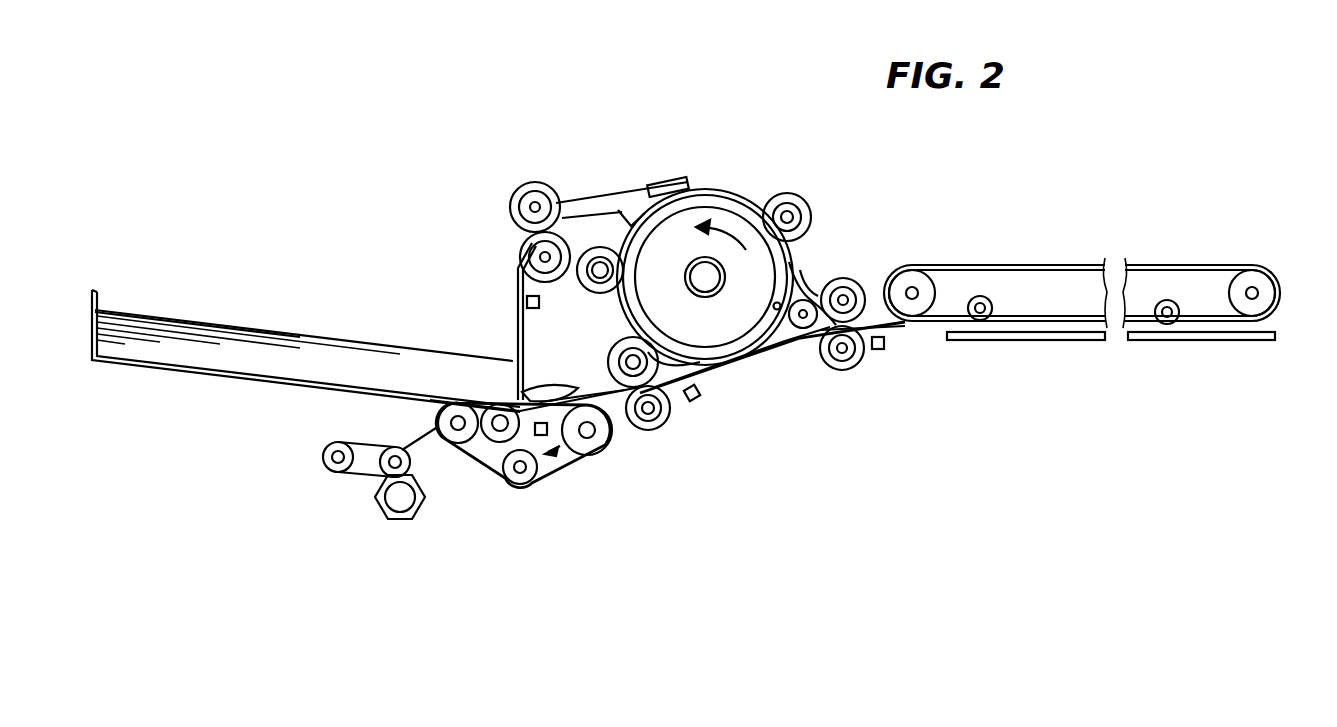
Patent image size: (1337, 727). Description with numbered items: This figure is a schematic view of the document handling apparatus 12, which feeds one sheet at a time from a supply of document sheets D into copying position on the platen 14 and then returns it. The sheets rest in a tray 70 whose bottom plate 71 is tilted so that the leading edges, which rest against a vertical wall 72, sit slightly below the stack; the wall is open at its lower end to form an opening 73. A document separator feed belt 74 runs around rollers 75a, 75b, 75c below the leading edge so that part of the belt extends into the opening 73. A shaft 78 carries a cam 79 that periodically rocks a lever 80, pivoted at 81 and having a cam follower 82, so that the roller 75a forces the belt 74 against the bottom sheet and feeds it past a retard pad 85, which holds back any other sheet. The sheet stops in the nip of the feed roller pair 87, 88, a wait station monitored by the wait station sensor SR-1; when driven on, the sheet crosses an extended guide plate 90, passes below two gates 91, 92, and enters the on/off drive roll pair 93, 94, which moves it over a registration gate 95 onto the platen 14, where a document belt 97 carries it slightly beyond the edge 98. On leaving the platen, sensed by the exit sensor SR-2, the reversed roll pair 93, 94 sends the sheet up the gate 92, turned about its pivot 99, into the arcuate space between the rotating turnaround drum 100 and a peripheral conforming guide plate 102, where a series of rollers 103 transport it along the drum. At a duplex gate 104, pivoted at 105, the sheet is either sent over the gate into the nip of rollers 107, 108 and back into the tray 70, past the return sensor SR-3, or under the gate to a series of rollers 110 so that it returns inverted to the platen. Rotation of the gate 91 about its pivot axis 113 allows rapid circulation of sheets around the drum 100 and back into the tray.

The document handling apparatus 12 is at (483, 168).
The platen 14 is at (1036, 341).
The tray 70 is at (96, 296).
The bottom plate 71 is at (165, 373).
The document sheets D is at (246, 328).
The vertical wall 72 is at (516, 306).
The opening 73 is at (515, 396).
The document separator feed belt 74 is at (493, 488).
The roller 75a is at (440, 422).
The roller 75b is at (476, 452).
The roller 75c is at (610, 446).
The shaft 78 is at (400, 514).
The cam 79 is at (388, 506).
The lever 80 is at (388, 448).
The pivot 81 is at (325, 447).
The cam follower 82 is at (376, 474).
The retard pad 85 is at (562, 386).
The feed roller 87 is at (620, 350).
The feed roller 88 is at (666, 421).
The extended guide plate 90 is at (705, 378).
The gate 91 is at (752, 350).
The gate 92 is at (806, 334).
The on/off drive roll 93 is at (847, 372).
The on/off drive roll 94 is at (852, 290).
The registration gate 95 is at (924, 330).
The document belt 97 is at (1020, 266).
The edge 98 is at (948, 322).
The pivot 99 is at (812, 276).
The turnaround drum 100 is at (731, 200).
The peripheral conforming guide plate 102 is at (757, 202).
The rollers 103 is at (812, 216).
The duplex gate 104 is at (662, 186).
The pivot 105 is at (622, 208).
The roller 107 is at (542, 184).
The roller 108 is at (521, 245).
The rollers 110 is at (597, 292).
The pivot axis 113 is at (770, 306).
The wait station sensor SR-1 is at (692, 400).
The exit sensor SR-2 is at (880, 352).
The return sensor SR-3 is at (527, 300).